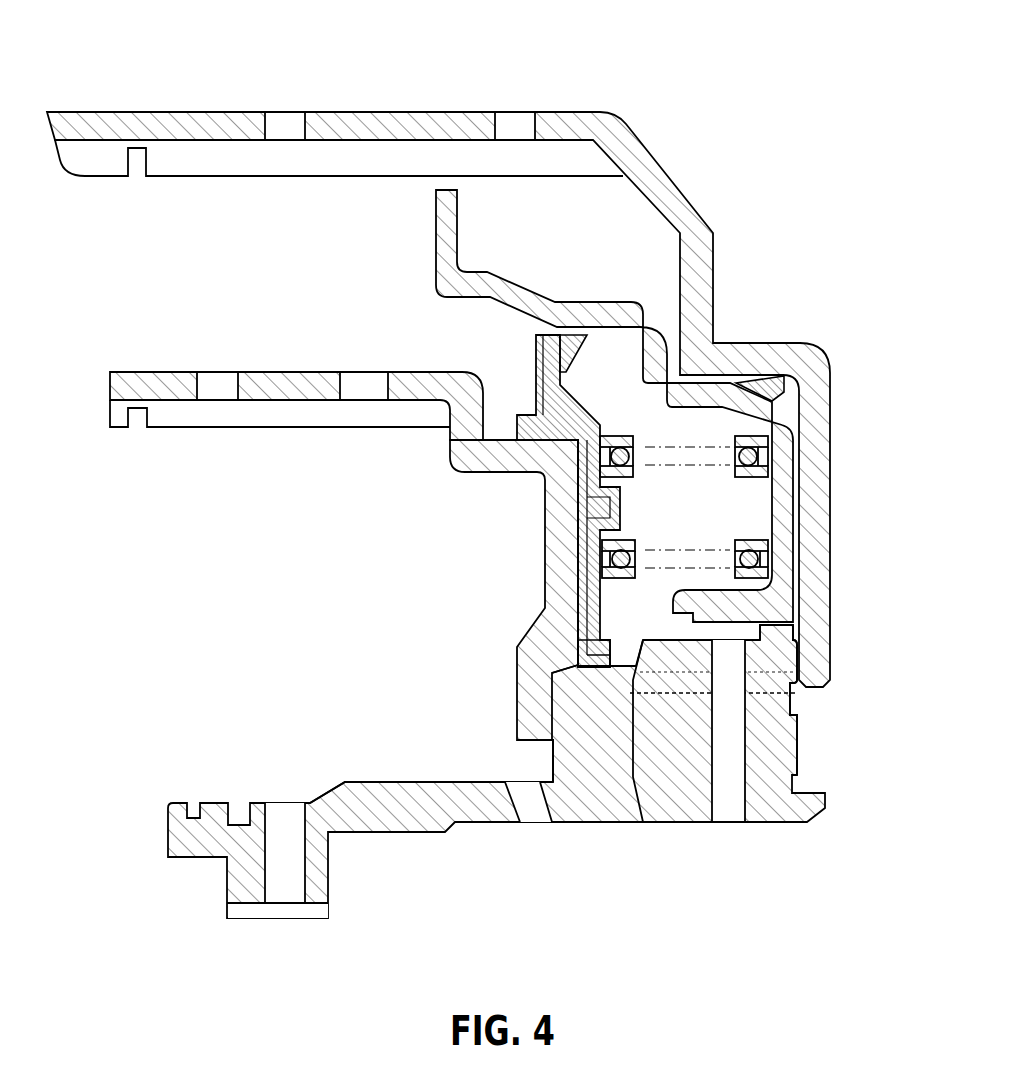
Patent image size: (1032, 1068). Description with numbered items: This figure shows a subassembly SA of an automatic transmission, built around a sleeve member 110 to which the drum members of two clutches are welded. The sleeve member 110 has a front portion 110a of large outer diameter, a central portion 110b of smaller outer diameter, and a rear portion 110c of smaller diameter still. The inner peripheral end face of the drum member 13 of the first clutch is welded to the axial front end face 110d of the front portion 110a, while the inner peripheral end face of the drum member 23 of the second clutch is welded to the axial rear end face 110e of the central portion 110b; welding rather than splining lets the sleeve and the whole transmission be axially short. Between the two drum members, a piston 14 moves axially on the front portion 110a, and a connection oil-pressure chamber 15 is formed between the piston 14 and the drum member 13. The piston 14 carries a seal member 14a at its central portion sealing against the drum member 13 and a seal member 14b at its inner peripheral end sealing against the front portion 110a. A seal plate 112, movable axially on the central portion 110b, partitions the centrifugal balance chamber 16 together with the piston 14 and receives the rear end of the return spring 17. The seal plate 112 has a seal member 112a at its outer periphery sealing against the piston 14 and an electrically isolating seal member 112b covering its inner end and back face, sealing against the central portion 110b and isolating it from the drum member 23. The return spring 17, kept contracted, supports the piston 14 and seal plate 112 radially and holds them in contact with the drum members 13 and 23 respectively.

The subassembly SA is at (262, 75).
The drum member 13 is at (648, 156).
The piston 14 is at (460, 229).
The seal member 14a is at (778, 377).
The seal member 14b is at (703, 628).
The connection oil-pressure chamber 15 is at (788, 616).
The centrifugal balance chamber 16 is at (702, 517).
The return spring 17 is at (667, 571).
The drum member 23 is at (263, 369).
The sleeve member 110 is at (519, 679).
The front portion 110a is at (700, 759).
The central portion 110b is at (580, 743).
The rear portion 110c is at (358, 779).
The end face 110d is at (798, 682).
The end face 110e is at (550, 757).
The seal plate 112 is at (577, 396).
The seal member 112a is at (586, 312).
The seal member 112b is at (556, 642).